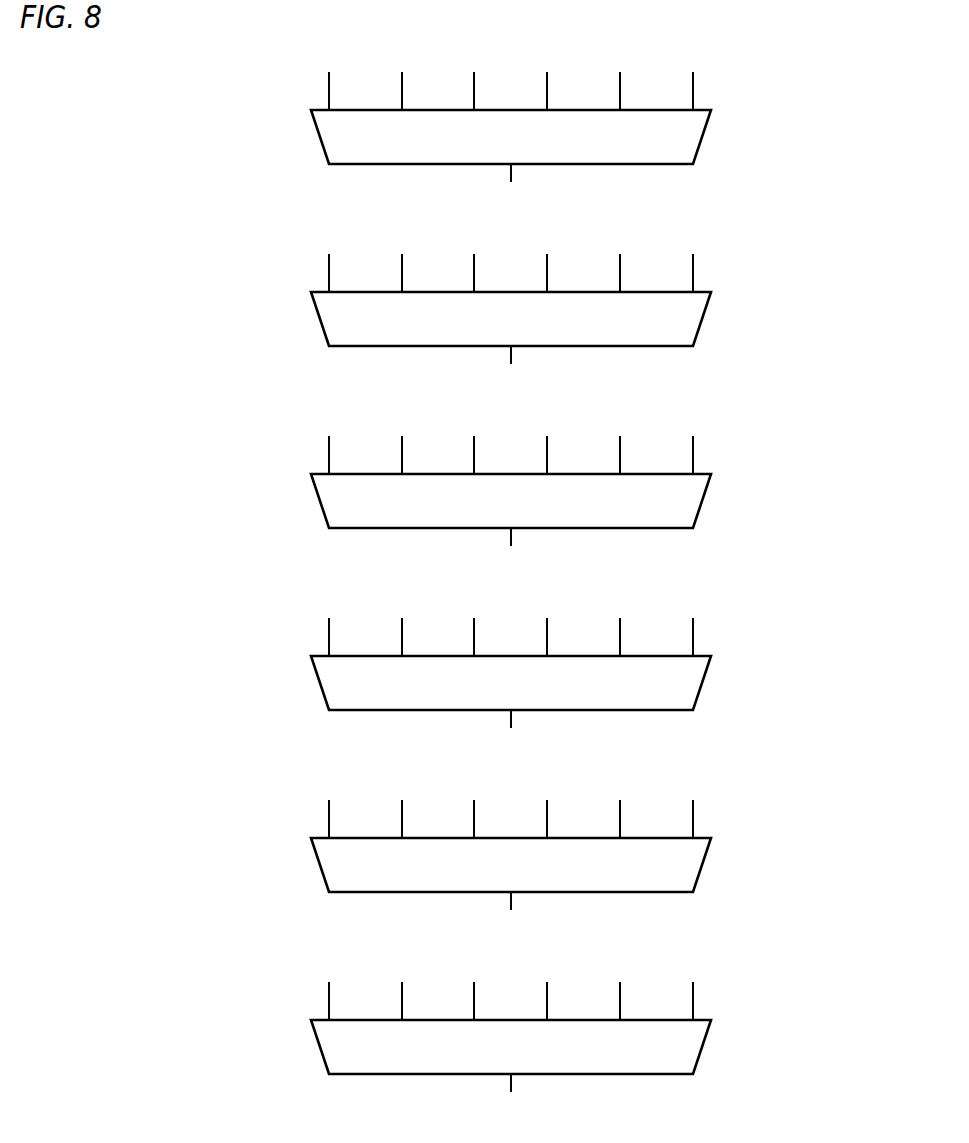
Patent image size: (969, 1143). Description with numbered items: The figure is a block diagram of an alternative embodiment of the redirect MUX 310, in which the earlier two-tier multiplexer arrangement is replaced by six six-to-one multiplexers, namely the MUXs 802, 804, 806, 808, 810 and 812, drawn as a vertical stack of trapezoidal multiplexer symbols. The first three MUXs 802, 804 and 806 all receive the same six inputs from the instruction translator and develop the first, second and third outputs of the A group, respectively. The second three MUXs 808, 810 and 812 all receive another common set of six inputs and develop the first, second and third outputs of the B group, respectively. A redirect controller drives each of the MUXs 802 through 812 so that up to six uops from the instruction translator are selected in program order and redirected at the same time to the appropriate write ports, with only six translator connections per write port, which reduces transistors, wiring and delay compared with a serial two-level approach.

The redirect MUX 310 is at (824, 626).
The 6:1 MUX 802 is at (497, 146).
The 6:1 MUX 804 is at (497, 328).
The 6:1 MUX 806 is at (497, 510).
The 6:1 MUX 808 is at (497, 692).
The 6:1 MUX 810 is at (497, 874).
The 6:1 MUX 812 is at (497, 1056).